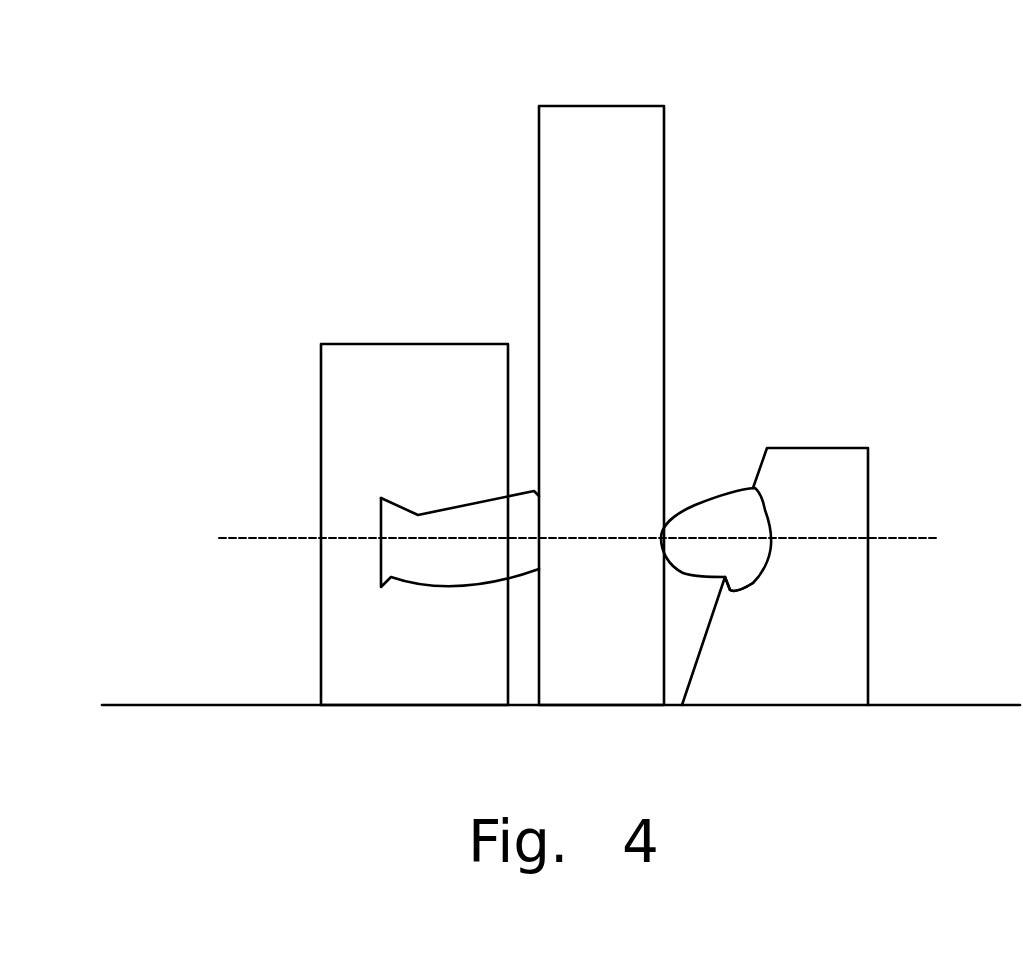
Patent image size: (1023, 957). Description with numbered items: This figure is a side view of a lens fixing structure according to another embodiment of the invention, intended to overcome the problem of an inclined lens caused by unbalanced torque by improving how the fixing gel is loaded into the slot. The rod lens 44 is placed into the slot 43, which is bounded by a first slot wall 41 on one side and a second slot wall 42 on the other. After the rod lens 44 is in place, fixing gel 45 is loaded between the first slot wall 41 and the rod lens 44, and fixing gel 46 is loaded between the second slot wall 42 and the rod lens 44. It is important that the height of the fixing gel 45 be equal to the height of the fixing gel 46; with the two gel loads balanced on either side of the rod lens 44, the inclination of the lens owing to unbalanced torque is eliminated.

The first slot wall 41 is at (378, 378).
The second slot wall 42 is at (817, 478).
The slot 43 is at (693, 447).
The rod lens 44 is at (609, 143).
The fixing gel 45 is at (745, 557).
The fixing gel 46 is at (400, 556).